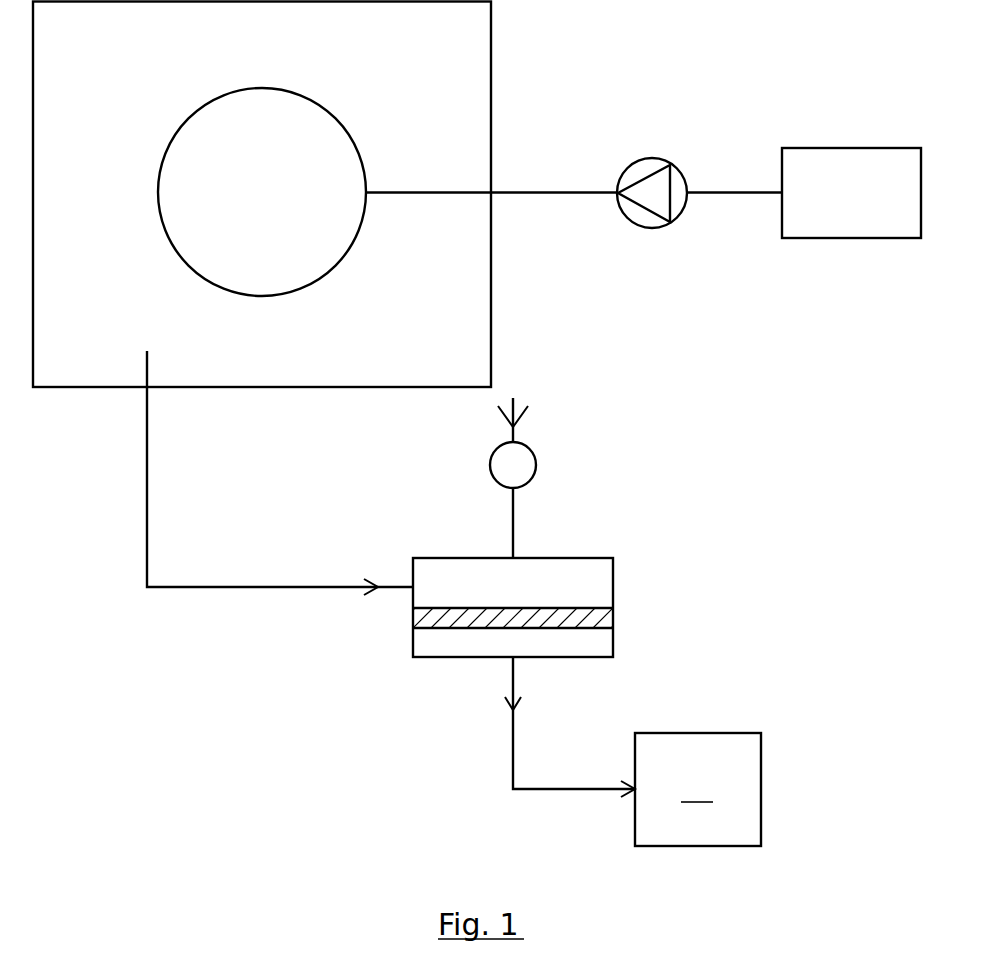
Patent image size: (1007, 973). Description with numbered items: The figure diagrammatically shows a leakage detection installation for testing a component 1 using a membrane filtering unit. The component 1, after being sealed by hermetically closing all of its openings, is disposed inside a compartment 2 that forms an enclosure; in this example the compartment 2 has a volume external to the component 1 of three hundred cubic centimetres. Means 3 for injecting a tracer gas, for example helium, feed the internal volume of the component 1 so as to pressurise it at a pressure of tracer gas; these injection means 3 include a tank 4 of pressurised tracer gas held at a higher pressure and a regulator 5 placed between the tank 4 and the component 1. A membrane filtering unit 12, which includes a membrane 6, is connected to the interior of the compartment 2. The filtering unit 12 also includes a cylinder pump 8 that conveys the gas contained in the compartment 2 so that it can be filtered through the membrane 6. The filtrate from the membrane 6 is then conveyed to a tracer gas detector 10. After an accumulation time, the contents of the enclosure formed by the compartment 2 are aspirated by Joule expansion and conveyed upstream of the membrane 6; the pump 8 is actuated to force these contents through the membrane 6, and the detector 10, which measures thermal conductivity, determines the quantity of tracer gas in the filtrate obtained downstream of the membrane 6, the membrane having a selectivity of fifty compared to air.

The component 1 is at (252, 211).
The compartment 2 is at (492, 348).
The means for injecting a tracer gas 3 is at (572, 162).
The tank 4 is at (853, 238).
The regulator 5 is at (647, 227).
The membrane 6 is at (605, 556).
The cylinder pump 8 is at (526, 461).
The tracer gas detector 10 is at (633, 751).
The membrane filtering unit 12 is at (787, 615).